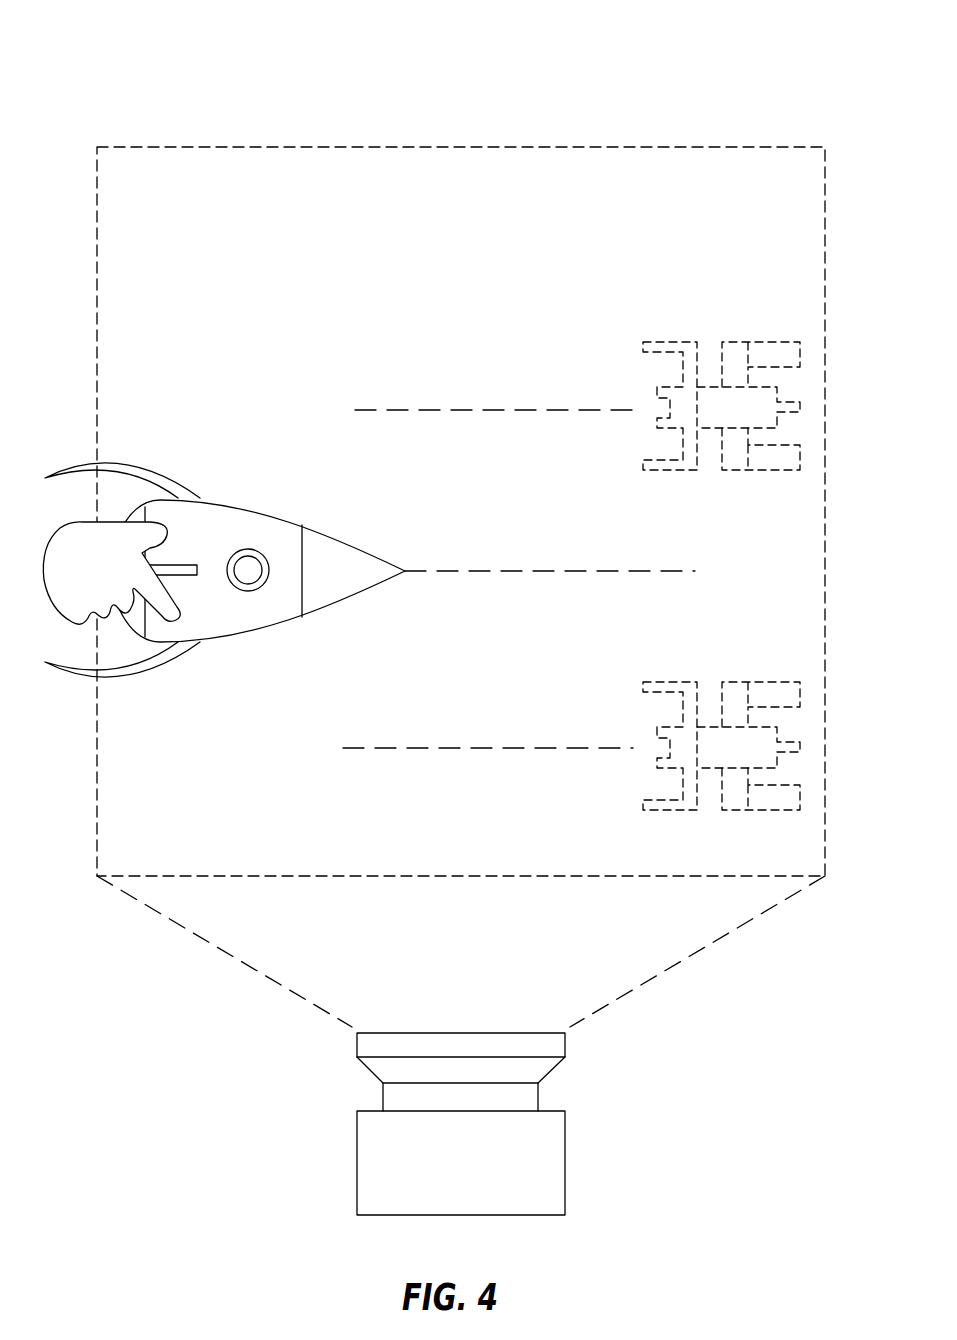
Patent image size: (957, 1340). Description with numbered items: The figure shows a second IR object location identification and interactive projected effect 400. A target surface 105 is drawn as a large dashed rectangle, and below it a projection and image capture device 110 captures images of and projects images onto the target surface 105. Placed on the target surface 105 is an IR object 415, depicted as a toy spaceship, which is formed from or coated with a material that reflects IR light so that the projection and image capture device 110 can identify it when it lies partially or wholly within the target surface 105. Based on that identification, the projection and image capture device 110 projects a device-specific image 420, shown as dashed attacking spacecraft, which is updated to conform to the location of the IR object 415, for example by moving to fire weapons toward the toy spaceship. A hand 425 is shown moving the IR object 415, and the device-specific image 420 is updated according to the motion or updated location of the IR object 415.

The second IR object location identification and interactive projected effect 400 is at (756, 43).
The target surface 105 is at (123, 163).
The projection and image capture device 110 is at (368, 1189).
The IR object 415 is at (240, 518).
The device-specific image 420 is at (753, 417).
The hand 425 is at (105, 627).